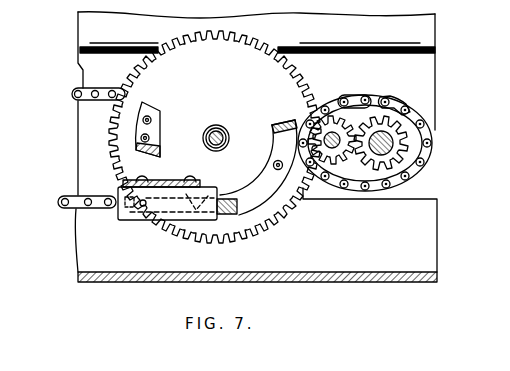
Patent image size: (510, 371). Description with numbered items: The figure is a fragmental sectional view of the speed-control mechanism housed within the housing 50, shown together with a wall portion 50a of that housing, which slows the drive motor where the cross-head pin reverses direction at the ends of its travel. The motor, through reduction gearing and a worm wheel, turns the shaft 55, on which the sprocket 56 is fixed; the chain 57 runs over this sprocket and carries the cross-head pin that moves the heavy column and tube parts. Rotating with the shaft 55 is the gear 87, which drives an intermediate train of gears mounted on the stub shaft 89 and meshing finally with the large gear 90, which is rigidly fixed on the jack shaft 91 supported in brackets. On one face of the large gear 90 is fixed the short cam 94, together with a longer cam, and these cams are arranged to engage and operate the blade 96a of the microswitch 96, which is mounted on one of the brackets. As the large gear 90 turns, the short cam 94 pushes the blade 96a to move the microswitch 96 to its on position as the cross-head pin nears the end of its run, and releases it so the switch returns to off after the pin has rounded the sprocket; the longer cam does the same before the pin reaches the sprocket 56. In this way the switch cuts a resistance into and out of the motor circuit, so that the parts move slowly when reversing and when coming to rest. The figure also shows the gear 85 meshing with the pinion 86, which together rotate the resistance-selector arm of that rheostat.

The housing 50 is at (372, 273).
The frame side wall 50a is at (430, 226).
The shaft 55 is at (414, 171).
The sprocket 56 is at (397, 110).
The chain 57 is at (357, 100).
The gear 85 is at (283, 131).
The pinion 86 is at (334, 168).
The gear 87 is at (395, 150).
The stub shaft 89 is at (292, 121).
The large gear 90 is at (266, 222).
The jack shaft 91 is at (219, 130).
The short cam 94 is at (148, 110).
The microswitch 96 is at (140, 221).
The blade 96a is at (224, 198).